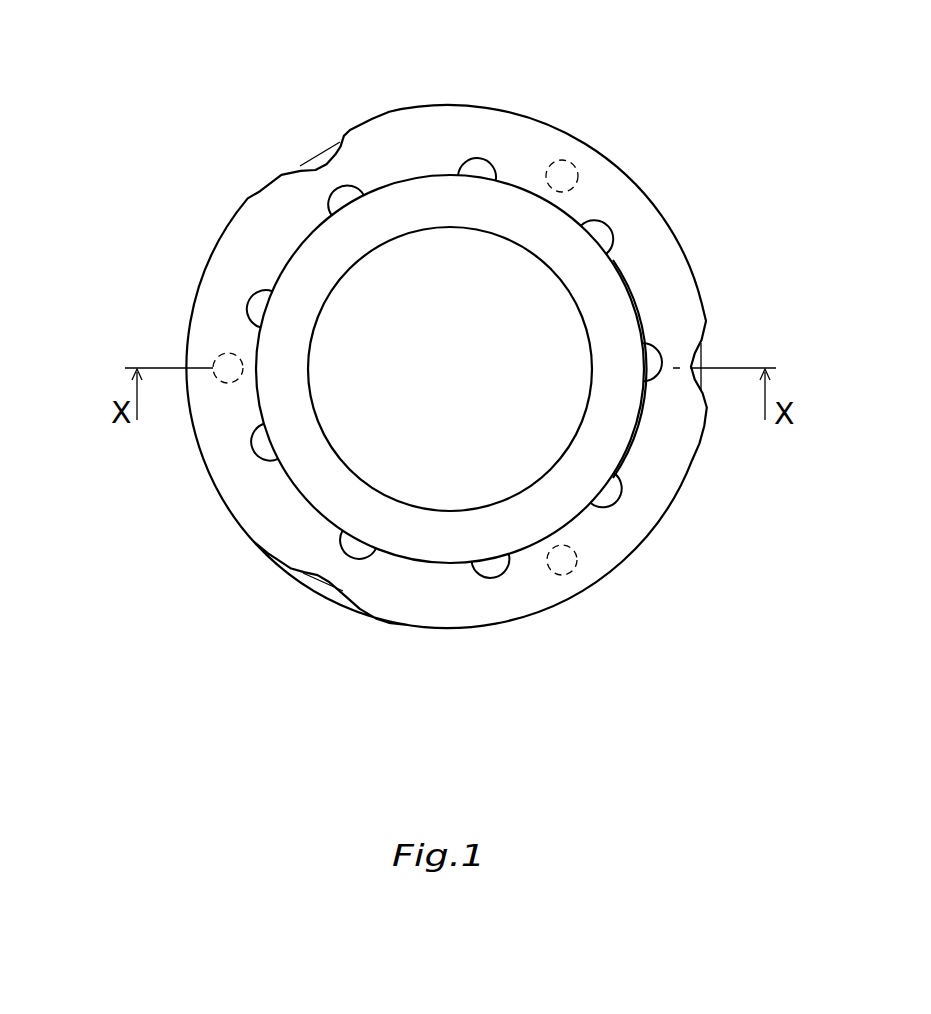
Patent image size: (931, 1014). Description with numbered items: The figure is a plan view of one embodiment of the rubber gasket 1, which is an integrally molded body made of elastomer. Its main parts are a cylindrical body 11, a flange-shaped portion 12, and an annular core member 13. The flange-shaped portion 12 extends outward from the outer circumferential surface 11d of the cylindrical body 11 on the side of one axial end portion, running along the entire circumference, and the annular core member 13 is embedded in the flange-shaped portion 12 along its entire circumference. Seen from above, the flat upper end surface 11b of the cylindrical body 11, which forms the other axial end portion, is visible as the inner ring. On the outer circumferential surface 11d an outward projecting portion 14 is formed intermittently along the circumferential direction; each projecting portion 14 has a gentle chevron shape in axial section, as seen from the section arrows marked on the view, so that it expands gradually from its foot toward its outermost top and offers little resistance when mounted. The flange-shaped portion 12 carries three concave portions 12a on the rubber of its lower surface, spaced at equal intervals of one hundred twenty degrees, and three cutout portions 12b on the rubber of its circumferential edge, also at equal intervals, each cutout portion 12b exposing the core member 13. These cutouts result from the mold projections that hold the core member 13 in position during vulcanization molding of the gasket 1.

The rubber gasket 1 is at (614, 70).
The cylindrical body 11 is at (440, 545).
The upper end surface 11b is at (427, 200).
The outer circumferential surface 11d is at (637, 433).
The flange-shaped portion 12 is at (632, 530).
The concave portion 12a is at (578, 178).
The cutout portion 12b is at (330, 163).
The annular core member 13 is at (333, 583).
The projecting portion 14 is at (653, 355).